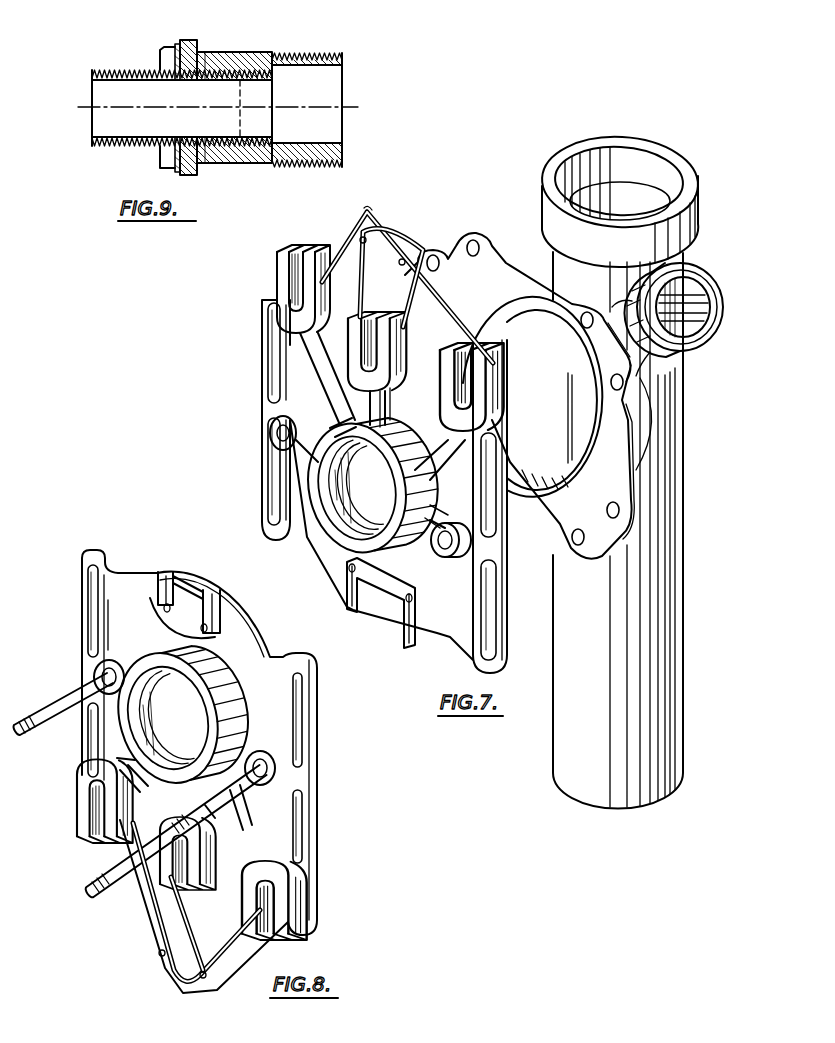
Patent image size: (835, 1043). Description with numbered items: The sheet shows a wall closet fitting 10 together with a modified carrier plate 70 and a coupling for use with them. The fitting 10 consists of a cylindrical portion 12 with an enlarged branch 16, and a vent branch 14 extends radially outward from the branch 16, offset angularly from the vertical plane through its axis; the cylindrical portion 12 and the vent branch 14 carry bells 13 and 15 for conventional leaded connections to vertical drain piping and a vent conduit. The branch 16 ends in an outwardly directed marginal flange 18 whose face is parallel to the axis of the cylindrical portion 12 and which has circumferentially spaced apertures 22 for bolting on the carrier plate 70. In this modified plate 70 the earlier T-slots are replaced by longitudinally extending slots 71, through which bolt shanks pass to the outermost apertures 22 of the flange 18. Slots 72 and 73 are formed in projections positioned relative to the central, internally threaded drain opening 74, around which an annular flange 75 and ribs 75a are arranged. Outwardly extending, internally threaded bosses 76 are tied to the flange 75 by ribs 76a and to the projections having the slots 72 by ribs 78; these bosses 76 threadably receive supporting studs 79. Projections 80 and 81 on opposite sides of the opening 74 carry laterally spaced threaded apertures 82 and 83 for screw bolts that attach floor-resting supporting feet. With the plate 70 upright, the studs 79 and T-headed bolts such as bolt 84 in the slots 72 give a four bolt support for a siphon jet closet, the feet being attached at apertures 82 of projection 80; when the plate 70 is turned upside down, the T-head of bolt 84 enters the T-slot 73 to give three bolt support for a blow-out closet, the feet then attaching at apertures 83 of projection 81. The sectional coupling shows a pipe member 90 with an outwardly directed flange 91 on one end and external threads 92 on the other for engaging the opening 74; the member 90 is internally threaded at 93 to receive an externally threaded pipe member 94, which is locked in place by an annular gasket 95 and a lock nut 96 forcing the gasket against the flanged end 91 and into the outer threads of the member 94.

In FIG. 7, the wall closet fitting 10 is at (694, 522).
In FIG. 7, the cylindrical portion 12 is at (666, 633).
In FIG. 7, the bell 13 is at (692, 173).
In FIG. 7, the vent branch 14 is at (711, 302).
In FIG. 7, the bell 15 is at (700, 273).
In FIG. 7, the branch 16 is at (514, 298).
In FIG. 7, the marginal flange 18 is at (532, 282).
In FIG. 7, the apertures 22 is at (468, 240).
In FIG. 7, the carrier plate 70 is at (258, 500).
In FIG. 8, the carrier plate 70 is at (317, 778).
In FIG. 7, the slots 71 is at (265, 378).
In FIG. 8, the slots 71 is at (88, 631).
In FIG. 7, the T-slots 72 is at (298, 258).
In FIG. 8, the T-slots 72 is at (97, 823).
In FIG. 7, the T-slot 73 is at (363, 333).
In FIG. 8, the T-slot 73 is at (166, 878).
In FIG. 7, the drain opening 74 is at (330, 513).
In FIG. 8, the drain opening 74 is at (168, 700).
In FIG. 7, the annular flange 75 is at (351, 532).
In FIG. 8, the annular flange 75 is at (340, 537).
In FIG. 7, the ribs 75a is at (378, 397).
In FIG. 8, the ribs 75a is at (176, 803).
In FIG. 7, the bosses 76 is at (276, 440).
In FIG. 8, the bosses 76 is at (110, 664).
In FIG. 7, the ribs 76a is at (428, 530).
In FIG. 7, the ribs 78 is at (270, 418).
In FIG. 8, the ribs 78 is at (100, 733).
In FIG. 8, the supporting studs 79 is at (63, 697).
In FIG. 7, the projection 80 is at (350, 610).
In FIG. 8, the projection 80 is at (205, 590).
In FIG. 7, the projection 81 is at (366, 218).
In FIG. 8, the projection 81 is at (168, 976).
In FIG. 7, the threaded apertures 82 is at (400, 602).
In FIG. 8, the threaded apertures 82 is at (160, 606).
In FIG. 7, the threaded apertures 83 is at (398, 234).
In FIG. 8, the threaded apertures 83 is at (160, 953).
In FIG. 8, the supporting screw bolt 84 is at (90, 883).
In FIG. 9, the pipe member 90 is at (230, 53).
In FIG. 9, the flange 91 is at (191, 43).
In FIG. 9, the external threads 92 is at (311, 55).
In FIG. 9, the internal threads 93 is at (214, 70).
In FIG. 9, the pipe member 94 is at (126, 70).
In FIG. 9, the annular gasket 95 is at (173, 44).
In FIG. 9, the lock nut 96 is at (163, 48).